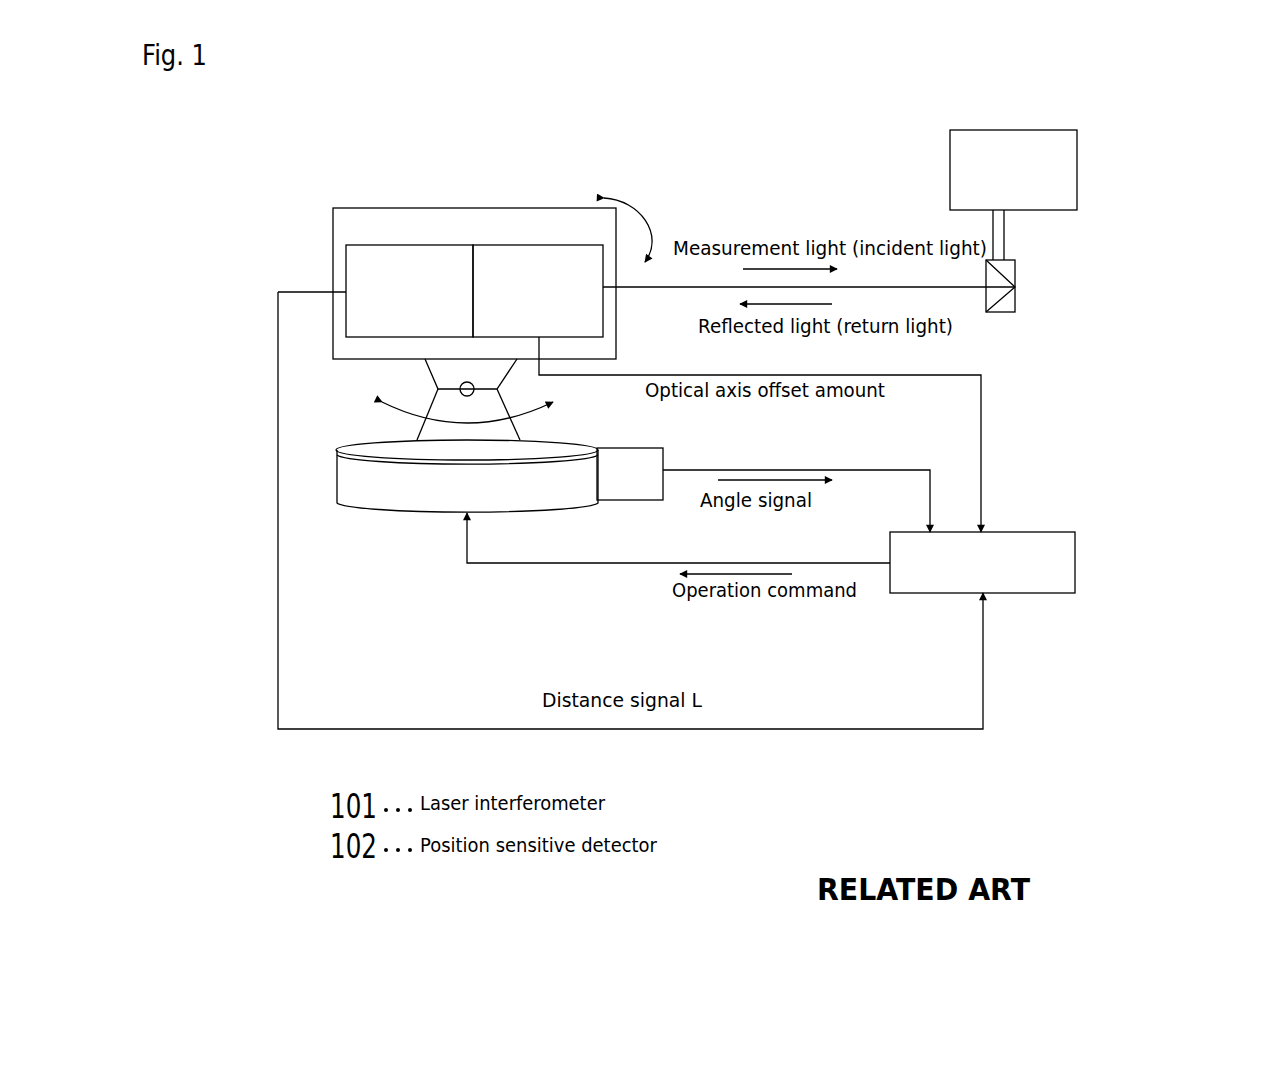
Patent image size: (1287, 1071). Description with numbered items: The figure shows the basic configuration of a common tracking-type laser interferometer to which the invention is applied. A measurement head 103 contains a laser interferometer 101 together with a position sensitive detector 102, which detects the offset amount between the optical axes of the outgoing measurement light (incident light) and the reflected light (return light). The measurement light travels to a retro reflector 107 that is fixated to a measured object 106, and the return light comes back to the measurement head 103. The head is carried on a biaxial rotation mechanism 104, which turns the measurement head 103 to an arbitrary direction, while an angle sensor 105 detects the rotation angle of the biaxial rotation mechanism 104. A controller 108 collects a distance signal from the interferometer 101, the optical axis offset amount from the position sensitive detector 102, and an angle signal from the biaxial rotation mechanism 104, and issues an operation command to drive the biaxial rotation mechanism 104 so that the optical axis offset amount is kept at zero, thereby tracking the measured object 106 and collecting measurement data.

The laser interferometer 101 is at (391, 228).
The position sensitive detector 102 is at (539, 228).
The measurement head 103 is at (468, 208).
The biaxial rotation mechanism 104 is at (363, 511).
The angle sensor 105 is at (627, 448).
The measured object 106 is at (988, 130).
The retro reflector 107 is at (1015, 300).
The controller 108 is at (1033, 532).